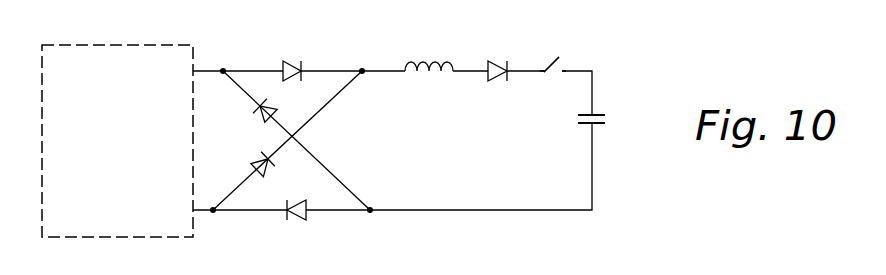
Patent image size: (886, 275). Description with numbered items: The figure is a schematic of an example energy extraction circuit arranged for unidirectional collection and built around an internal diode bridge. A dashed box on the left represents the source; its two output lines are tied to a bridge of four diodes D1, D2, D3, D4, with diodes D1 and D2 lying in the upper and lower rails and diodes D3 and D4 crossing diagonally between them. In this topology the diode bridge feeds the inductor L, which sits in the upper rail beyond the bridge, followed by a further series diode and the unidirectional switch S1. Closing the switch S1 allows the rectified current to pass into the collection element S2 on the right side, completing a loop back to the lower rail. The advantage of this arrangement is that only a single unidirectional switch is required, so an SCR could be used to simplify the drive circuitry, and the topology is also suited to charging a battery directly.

The diode D1 is at (295, 58).
The diode D2 is at (303, 223).
The diode D3 is at (277, 104).
The diode D4 is at (272, 173).
The inductor L is at (429, 53).
The unidirectional switch S1 is at (553, 77).
The collection capacitor S2 is at (603, 121).